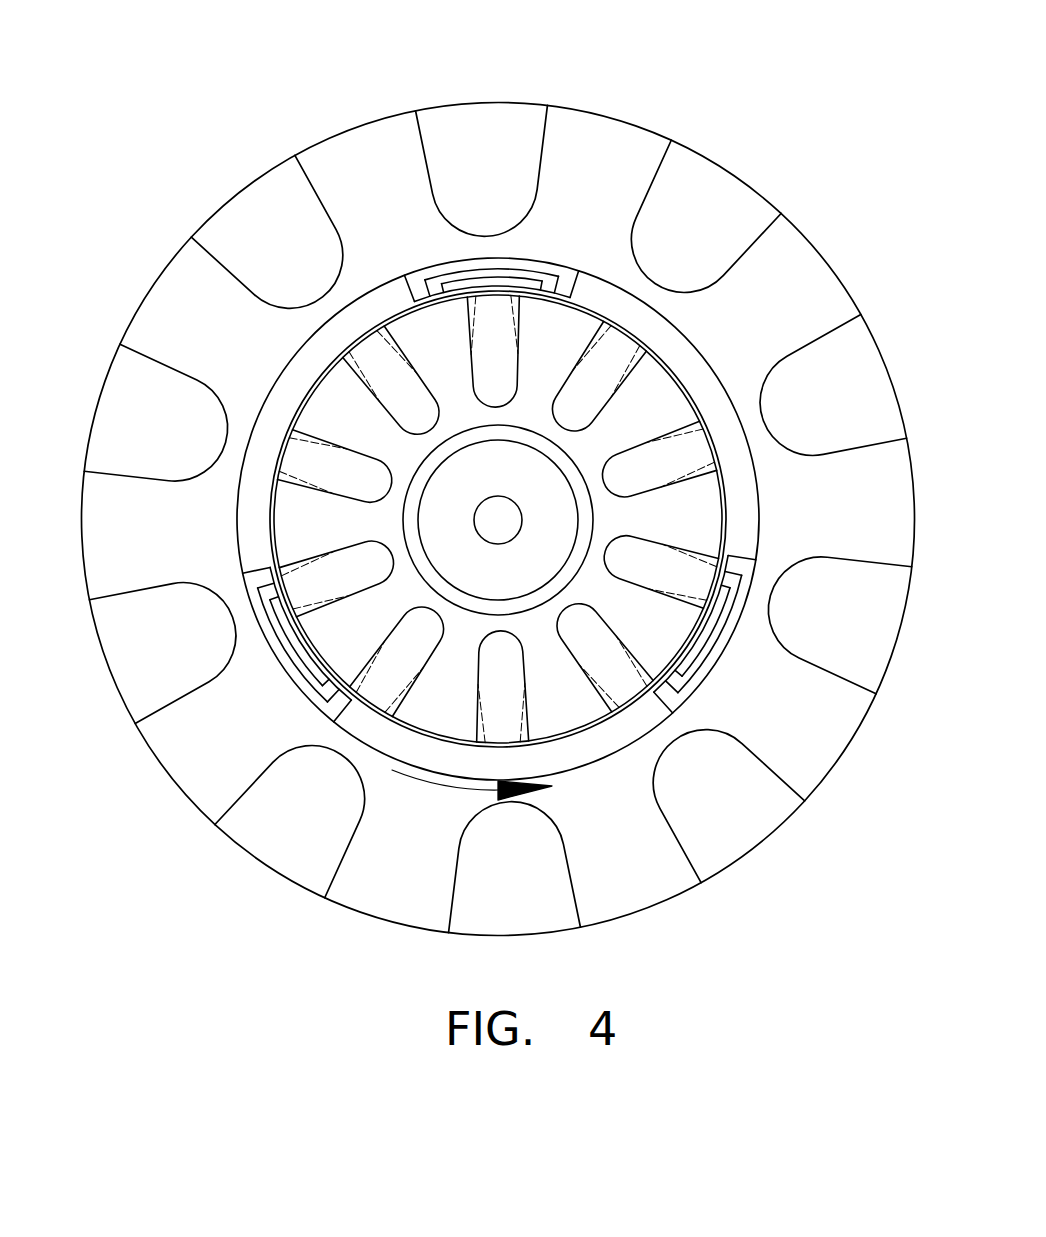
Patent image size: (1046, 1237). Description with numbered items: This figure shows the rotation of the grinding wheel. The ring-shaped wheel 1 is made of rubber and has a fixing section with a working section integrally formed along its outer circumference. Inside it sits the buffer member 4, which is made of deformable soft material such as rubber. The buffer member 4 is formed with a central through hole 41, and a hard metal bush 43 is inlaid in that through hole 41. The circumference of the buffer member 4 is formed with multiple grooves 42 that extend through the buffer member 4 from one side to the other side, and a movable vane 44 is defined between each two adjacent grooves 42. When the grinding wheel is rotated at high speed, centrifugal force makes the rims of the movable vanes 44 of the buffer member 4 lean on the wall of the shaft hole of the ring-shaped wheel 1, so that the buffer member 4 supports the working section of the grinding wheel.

The ring-shaped wheel 1 is at (178, 303).
The buffer member 4 is at (518, 425).
The central through hole 41 is at (495, 442).
The grooves 42 is at (496, 352).
The hard metal bush 43 is at (560, 463).
The movable vane 44 is at (668, 410).